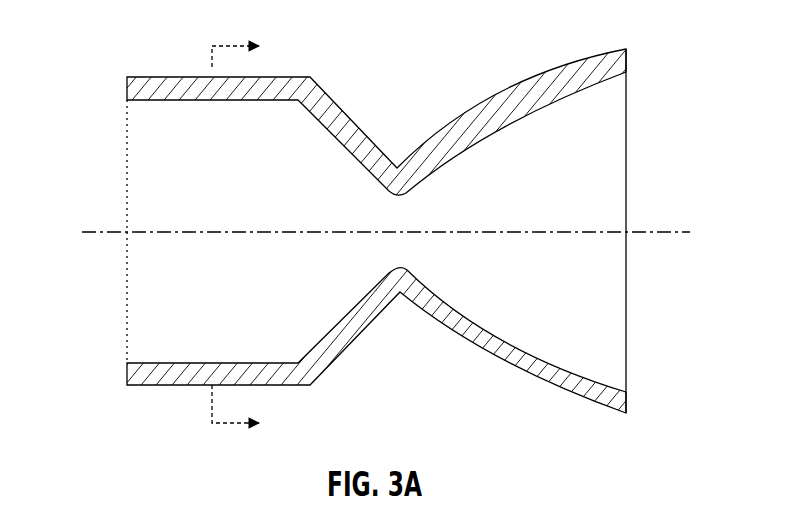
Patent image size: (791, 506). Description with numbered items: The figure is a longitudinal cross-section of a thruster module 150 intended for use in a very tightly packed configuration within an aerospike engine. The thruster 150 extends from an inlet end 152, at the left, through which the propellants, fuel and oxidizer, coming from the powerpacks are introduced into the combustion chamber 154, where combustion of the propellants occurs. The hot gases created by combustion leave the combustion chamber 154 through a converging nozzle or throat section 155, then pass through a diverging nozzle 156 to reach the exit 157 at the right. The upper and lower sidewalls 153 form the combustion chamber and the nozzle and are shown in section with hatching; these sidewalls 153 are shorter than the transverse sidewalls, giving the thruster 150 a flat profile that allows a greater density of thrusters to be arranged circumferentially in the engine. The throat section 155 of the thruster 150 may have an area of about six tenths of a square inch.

The thruster module 150 is at (486, 35).
The inlet end 152 is at (127, 299).
The sidewalls 153 is at (168, 90).
The combustion chamber 154 is at (180, 340).
The converging nozzle 155 is at (397, 170).
The diverging nozzle 156 is at (585, 65).
The exit 157 is at (613, 165).